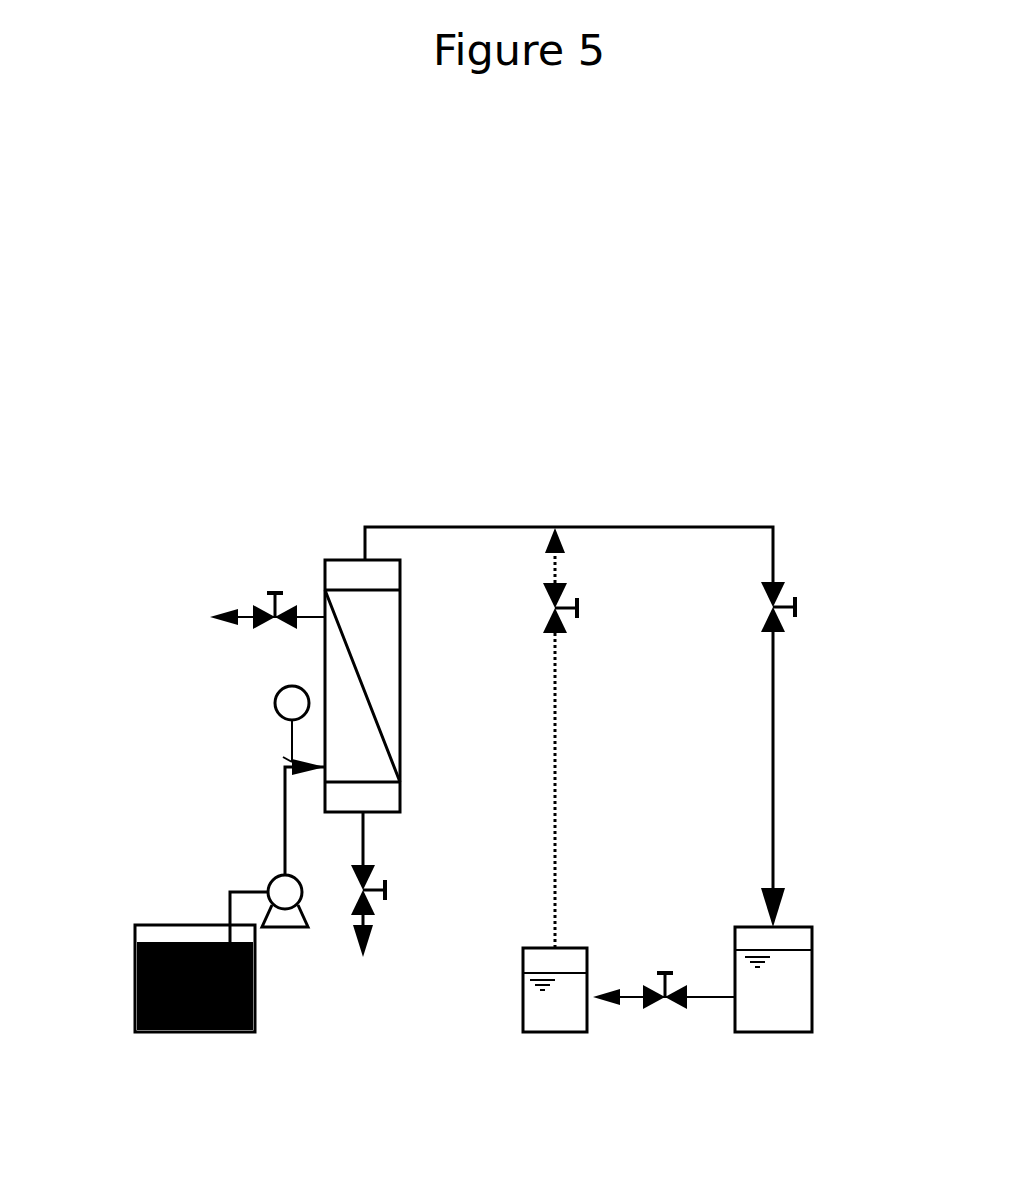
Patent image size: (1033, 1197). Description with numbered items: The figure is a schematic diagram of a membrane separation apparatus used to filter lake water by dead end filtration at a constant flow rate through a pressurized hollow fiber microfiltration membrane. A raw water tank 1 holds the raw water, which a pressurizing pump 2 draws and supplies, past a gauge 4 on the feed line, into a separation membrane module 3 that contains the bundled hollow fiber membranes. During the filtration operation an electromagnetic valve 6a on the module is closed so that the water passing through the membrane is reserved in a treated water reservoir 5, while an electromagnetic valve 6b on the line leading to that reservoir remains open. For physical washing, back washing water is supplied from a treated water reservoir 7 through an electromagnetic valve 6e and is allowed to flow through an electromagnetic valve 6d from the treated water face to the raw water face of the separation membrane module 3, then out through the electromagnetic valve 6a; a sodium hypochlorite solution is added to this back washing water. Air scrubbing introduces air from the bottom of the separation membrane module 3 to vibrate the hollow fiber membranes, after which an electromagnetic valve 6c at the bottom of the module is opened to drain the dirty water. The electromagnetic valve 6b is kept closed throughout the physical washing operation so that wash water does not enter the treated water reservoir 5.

The raw water tank 1 is at (135, 988).
The pressurizing pump 2 is at (287, 925).
The separation membrane module 3 is at (370, 642).
The pressure gauge 4 is at (283, 698).
The treated water reservoir 5 is at (795, 992).
The electromagnetic valve 6a is at (275, 590).
The electromagnetic valve 6b is at (797, 611).
The electromagnetic valve 6c is at (385, 893).
The electromagnetic valve 6d is at (580, 612).
The electromagnetic valve 6e is at (665, 968).
The treated water reservoir 7 is at (538, 1010).